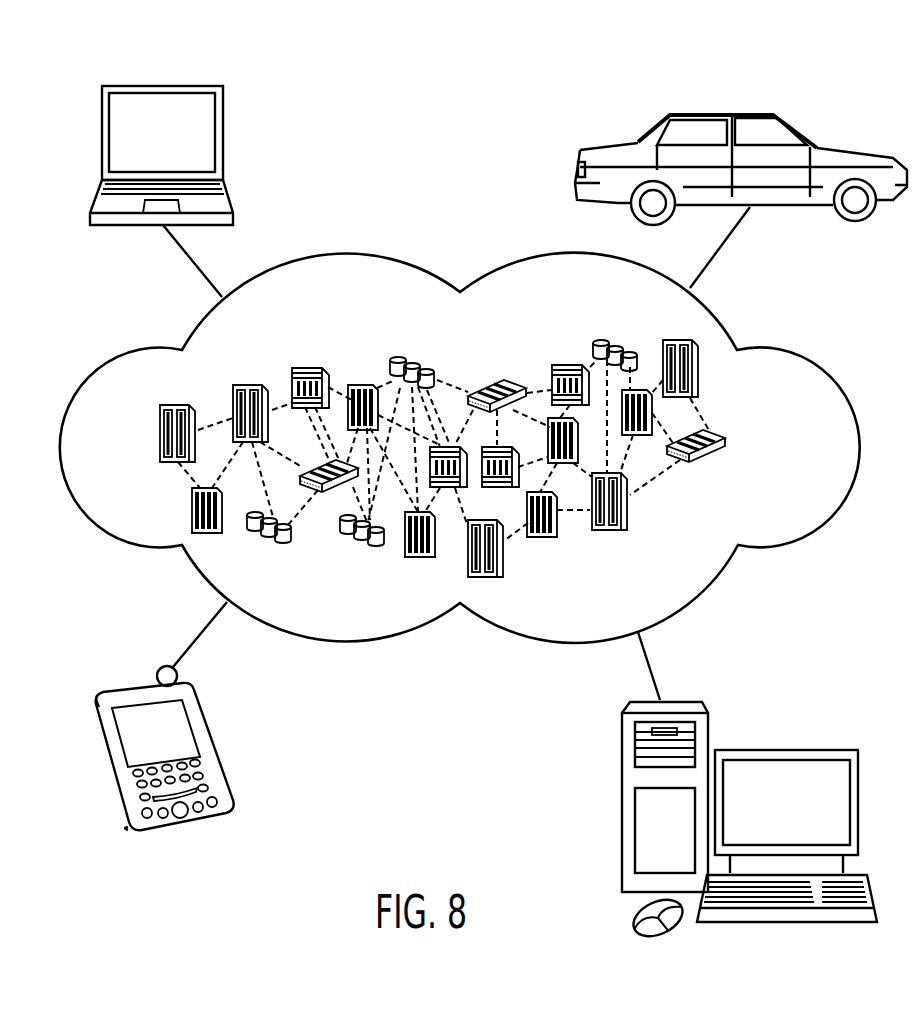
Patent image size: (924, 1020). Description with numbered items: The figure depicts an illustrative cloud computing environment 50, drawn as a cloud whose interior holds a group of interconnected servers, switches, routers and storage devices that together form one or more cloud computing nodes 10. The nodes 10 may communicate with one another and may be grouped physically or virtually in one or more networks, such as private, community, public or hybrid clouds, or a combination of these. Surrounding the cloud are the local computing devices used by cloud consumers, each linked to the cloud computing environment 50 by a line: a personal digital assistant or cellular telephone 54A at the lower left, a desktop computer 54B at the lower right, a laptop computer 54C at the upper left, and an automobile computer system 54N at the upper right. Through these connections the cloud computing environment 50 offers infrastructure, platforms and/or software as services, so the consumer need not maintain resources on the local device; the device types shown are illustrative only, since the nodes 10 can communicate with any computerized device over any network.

The cloud computing node 10 is at (734, 447).
The cloud computing environment 50 is at (800, 350).
The personal digital assistant or cellular telephone 54A is at (142, 685).
The desktop computer 54B is at (788, 748).
The laptop computer 54C is at (162, 85).
The automobile computer system 54N is at (723, 113).